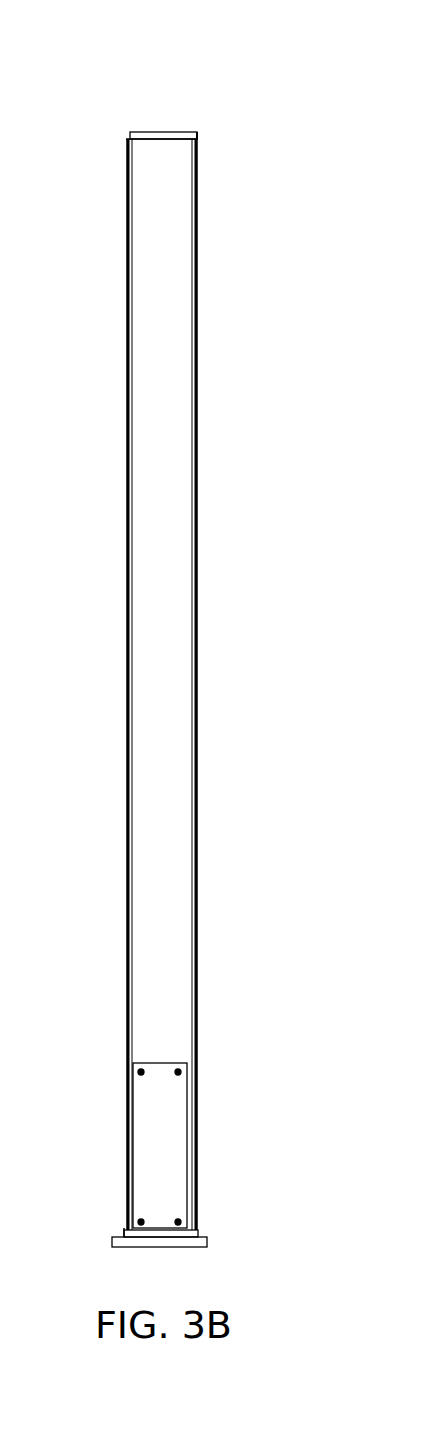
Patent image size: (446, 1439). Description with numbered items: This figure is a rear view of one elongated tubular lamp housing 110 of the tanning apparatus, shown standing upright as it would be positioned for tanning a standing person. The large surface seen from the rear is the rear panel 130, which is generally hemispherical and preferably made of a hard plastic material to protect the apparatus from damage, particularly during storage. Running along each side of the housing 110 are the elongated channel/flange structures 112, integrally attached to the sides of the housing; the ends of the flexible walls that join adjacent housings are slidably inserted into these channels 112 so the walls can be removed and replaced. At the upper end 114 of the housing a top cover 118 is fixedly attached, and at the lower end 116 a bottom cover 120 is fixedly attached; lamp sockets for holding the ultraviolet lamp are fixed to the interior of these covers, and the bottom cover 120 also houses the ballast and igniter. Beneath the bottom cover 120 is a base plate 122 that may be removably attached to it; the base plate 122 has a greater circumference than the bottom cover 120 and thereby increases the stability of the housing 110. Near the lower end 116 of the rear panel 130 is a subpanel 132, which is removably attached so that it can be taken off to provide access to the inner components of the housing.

The lamp housing 110 is at (108, 73).
The channel/flange structure 112 is at (127, 525).
The upper end 114 is at (205, 134).
The lower end 116 is at (110, 1225).
The top cover 118 is at (186, 134).
The bottom cover 120 is at (193, 1235).
The base plate 122 is at (196, 1243).
The rear panel 130 is at (163, 249).
The subpanel 132 is at (158, 1115).